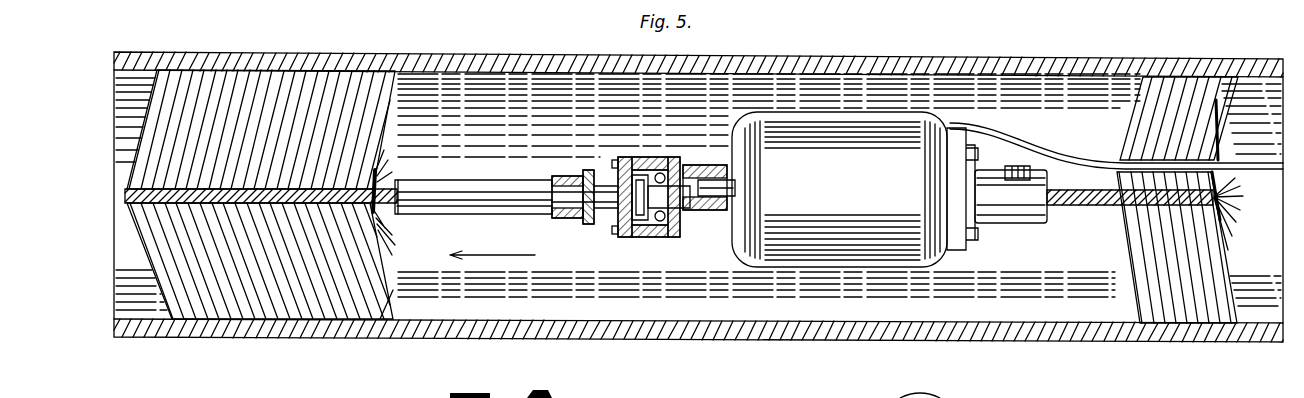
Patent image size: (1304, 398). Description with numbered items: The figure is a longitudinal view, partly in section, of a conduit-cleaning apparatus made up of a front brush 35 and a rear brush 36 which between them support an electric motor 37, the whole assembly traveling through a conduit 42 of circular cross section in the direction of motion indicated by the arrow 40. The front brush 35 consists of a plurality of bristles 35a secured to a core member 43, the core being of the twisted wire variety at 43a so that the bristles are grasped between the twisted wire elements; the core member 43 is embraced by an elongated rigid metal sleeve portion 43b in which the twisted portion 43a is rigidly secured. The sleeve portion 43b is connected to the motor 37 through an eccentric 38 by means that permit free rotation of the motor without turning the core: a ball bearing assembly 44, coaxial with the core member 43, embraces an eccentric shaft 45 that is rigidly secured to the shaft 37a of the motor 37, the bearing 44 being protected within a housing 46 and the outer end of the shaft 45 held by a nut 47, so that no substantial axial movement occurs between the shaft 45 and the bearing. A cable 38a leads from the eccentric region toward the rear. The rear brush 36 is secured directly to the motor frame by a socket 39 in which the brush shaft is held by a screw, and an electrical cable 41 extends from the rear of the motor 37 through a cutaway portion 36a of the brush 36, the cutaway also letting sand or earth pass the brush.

The front brush 35 is at (305, 305).
The bristles 35a is at (405, 300).
The rear brush 36 is at (1187, 313).
The cutaway portion 36a is at (1178, 88).
The electric motor 37 is at (827, 260).
The shaft of the motor 37a is at (706, 172).
The eccentric 38 is at (706, 212).
The cable 38a is at (1085, 208).
The socket 39 is at (1012, 222).
The arrow 40 is at (490, 255).
The electrical cable 41 is at (1248, 172).
The conduit 42 is at (133, 308).
The core member 43 is at (389, 207).
The twisted wire portion 43a is at (383, 171).
The sleeve portion 43b is at (558, 218).
The ball bearing assembly 44 is at (646, 168).
The eccentric shaft 45 is at (660, 222).
The housing 46 is at (662, 172).
The nut 47 is at (640, 224).